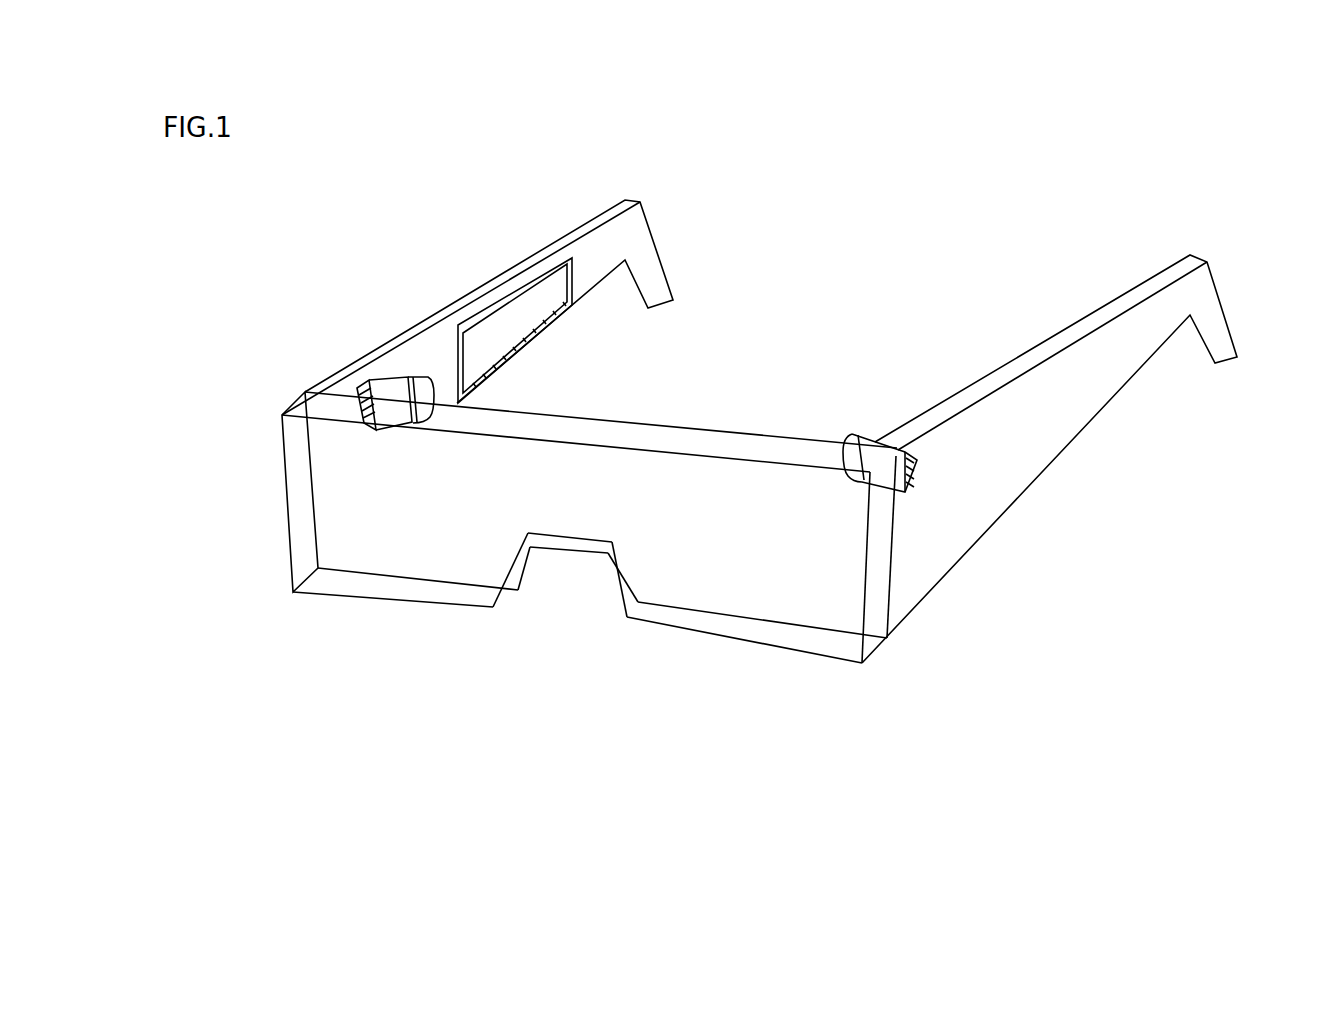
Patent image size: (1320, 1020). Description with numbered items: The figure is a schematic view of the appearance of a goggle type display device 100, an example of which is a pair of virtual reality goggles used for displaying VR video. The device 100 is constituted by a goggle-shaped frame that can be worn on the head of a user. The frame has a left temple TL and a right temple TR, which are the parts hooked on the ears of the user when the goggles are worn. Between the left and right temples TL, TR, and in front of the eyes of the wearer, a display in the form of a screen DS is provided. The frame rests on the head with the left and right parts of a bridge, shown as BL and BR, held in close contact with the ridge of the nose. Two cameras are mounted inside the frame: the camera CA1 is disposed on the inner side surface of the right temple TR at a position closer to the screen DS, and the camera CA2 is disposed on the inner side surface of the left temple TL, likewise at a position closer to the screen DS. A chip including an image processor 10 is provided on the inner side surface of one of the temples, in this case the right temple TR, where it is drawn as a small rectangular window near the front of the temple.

The goggle type display device 100 is at (976, 158).
The image processor 10 is at (507, 294).
The screen DS is at (755, 434).
The right temple TR is at (552, 243).
The left temple TL is at (1118, 297).
The camera CA1 is at (358, 380).
The camera CA2 is at (908, 498).
The right part of bridge BR is at (530, 547).
The left part of bridge BL is at (612, 543).